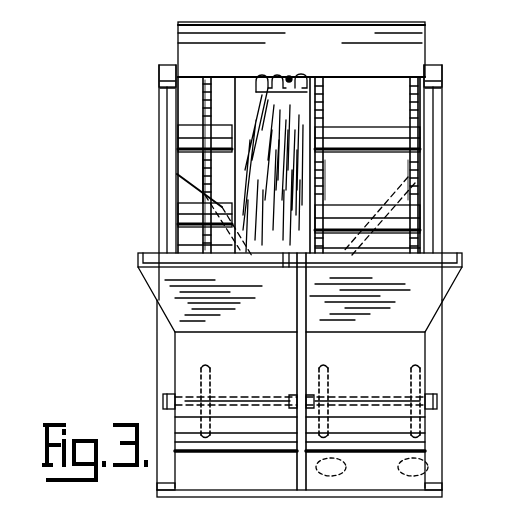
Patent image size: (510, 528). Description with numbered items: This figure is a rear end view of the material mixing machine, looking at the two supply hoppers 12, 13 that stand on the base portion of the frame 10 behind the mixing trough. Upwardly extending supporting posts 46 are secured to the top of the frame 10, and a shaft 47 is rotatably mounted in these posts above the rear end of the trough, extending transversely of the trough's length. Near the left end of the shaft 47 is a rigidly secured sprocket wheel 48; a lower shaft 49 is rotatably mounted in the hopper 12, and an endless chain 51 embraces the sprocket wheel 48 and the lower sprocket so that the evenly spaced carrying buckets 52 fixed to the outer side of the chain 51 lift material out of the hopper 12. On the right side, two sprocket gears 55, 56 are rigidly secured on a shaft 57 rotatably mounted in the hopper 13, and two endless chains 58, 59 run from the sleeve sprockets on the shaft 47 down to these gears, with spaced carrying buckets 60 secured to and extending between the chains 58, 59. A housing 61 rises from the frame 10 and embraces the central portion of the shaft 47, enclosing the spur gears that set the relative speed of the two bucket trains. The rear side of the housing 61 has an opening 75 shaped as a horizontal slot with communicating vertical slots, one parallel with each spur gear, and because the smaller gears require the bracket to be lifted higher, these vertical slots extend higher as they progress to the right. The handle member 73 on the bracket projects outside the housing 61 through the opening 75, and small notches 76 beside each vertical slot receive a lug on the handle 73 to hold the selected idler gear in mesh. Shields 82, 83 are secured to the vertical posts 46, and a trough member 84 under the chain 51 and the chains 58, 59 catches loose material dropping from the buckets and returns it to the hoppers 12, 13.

The base portion of the frame 10 is at (297, 498).
The supply hopper 12 is at (188, 373).
The supply hopper 13 is at (425, 374).
The supporting posts 46 is at (166, 165).
The shaft 47 is at (218, 165).
The sprocket wheel 48 is at (195, 165).
The shaft 49 is at (164, 403).
The endless chain 51 is at (211, 181).
The carrying buckets 52 is at (200, 131).
The sprocket gear 55 is at (331, 467).
The sprocket gear 56 is at (413, 467).
The shaft 57 is at (440, 405).
The endless chain 58 is at (324, 193).
The endless chain 59 is at (410, 195).
The carrying buckets 60 is at (365, 136).
The housing 61 is at (272, 240).
The handle member 73 is at (290, 76).
The opening 75 is at (283, 95).
The notches 76 is at (265, 78).
The shield 82 is at (417, 56).
The shield 83 is at (176, 179).
The trough member 84 is at (186, 244).